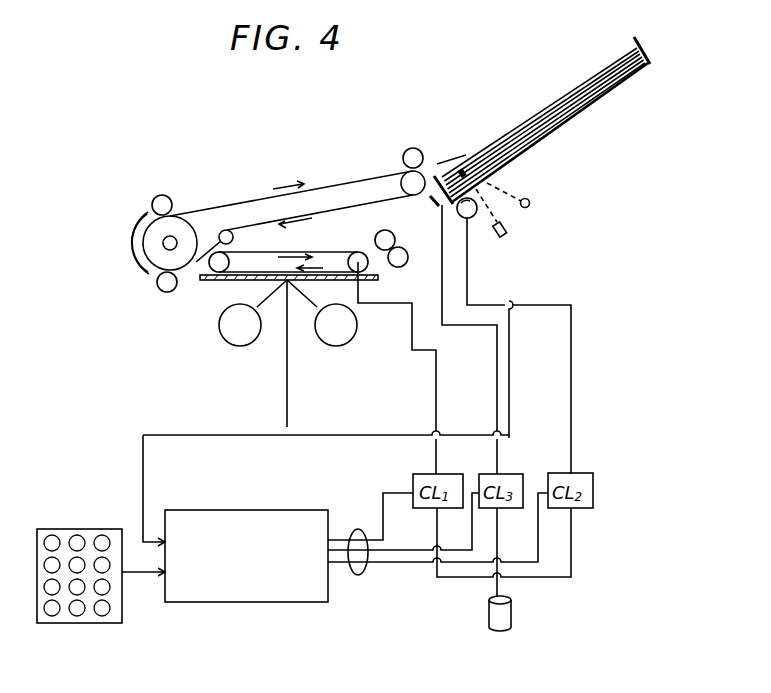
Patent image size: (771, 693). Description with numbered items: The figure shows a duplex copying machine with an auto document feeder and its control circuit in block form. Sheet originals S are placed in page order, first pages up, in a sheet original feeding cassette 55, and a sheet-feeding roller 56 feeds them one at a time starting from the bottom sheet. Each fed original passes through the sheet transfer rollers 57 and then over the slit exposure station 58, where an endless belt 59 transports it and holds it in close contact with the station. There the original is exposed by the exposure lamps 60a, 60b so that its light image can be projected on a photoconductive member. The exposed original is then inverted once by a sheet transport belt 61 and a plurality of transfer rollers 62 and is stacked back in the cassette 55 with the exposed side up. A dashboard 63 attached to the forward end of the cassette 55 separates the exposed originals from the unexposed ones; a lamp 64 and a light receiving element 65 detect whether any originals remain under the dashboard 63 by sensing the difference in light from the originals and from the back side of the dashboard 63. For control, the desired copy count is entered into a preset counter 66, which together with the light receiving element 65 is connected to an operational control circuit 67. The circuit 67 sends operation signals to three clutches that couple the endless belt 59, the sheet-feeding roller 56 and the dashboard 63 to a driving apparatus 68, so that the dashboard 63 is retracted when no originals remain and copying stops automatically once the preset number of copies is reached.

The sheet original feeding cassette 55 is at (553, 133).
The sheet originals S is at (602, 95).
The sheet-feeding roller 56 is at (463, 218).
The sheet transfer rollers 57 is at (395, 238).
The slit exposure station 58 is at (232, 282).
The endless belt 59 is at (288, 243).
The exposure lamp 60a is at (241, 346).
The exposure lamp 60b is at (336, 346).
The sheet transport belt 61 is at (254, 200).
The transfer rollers 62 is at (161, 195).
The dashboard 63 is at (455, 172).
The lamp 64 is at (531, 202).
The light receiving element 65 is at (508, 232).
The preset counter 66 is at (90, 528).
The operational control circuit 67 is at (256, 603).
The driving apparatus 68 is at (511, 620).